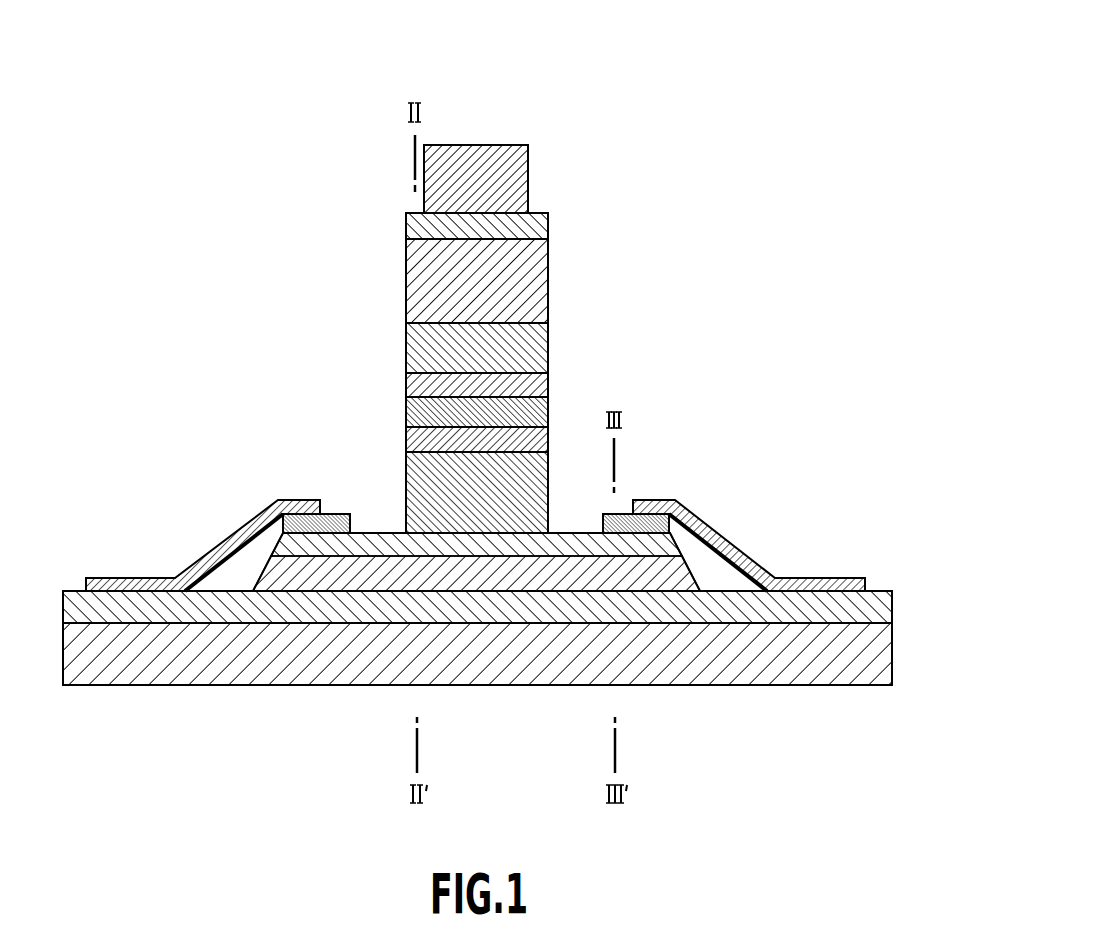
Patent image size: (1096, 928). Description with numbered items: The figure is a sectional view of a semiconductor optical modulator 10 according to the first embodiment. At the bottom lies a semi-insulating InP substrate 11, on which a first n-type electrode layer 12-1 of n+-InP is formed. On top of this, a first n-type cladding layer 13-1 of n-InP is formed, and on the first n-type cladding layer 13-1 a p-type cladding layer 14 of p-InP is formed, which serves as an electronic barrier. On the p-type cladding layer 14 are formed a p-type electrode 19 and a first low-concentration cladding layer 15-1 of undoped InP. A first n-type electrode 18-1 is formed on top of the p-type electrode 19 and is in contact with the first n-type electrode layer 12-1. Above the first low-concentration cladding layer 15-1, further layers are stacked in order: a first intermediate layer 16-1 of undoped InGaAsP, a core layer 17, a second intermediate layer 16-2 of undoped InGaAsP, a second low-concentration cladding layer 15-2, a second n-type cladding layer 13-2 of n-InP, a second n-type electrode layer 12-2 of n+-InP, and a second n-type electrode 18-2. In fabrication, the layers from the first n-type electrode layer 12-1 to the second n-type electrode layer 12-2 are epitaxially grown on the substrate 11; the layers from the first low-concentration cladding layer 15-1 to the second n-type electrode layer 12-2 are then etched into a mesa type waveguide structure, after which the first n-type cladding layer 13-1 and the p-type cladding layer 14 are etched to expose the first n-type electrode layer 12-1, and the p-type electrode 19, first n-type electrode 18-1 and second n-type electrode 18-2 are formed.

The semiconductor optical modulator 10 is at (698, 103).
The semi-insulating InP substrate 11 is at (233, 672).
The first n-type electrode layer 12-1 is at (135, 613).
The second n-type electrode layer 12-2 is at (548, 228).
The first n-type cladding layer 13-1 is at (688, 568).
The second n-type cladding layer 13-2 is at (548, 282).
The p-type cladding layer 14 is at (672, 516).
The first low-concentration cladding layer 15-1 is at (406, 480).
The second low-concentration cladding layer 15-2 is at (548, 345).
The first intermediate layer 16-1 is at (406, 443).
The second intermediate layer 16-2 is at (548, 385).
The core layer 17 is at (406, 415).
The first n-type electrode 18-1 is at (140, 580).
The second n-type electrode 18-2 is at (528, 155).
The p-type electrode 19 is at (293, 501).